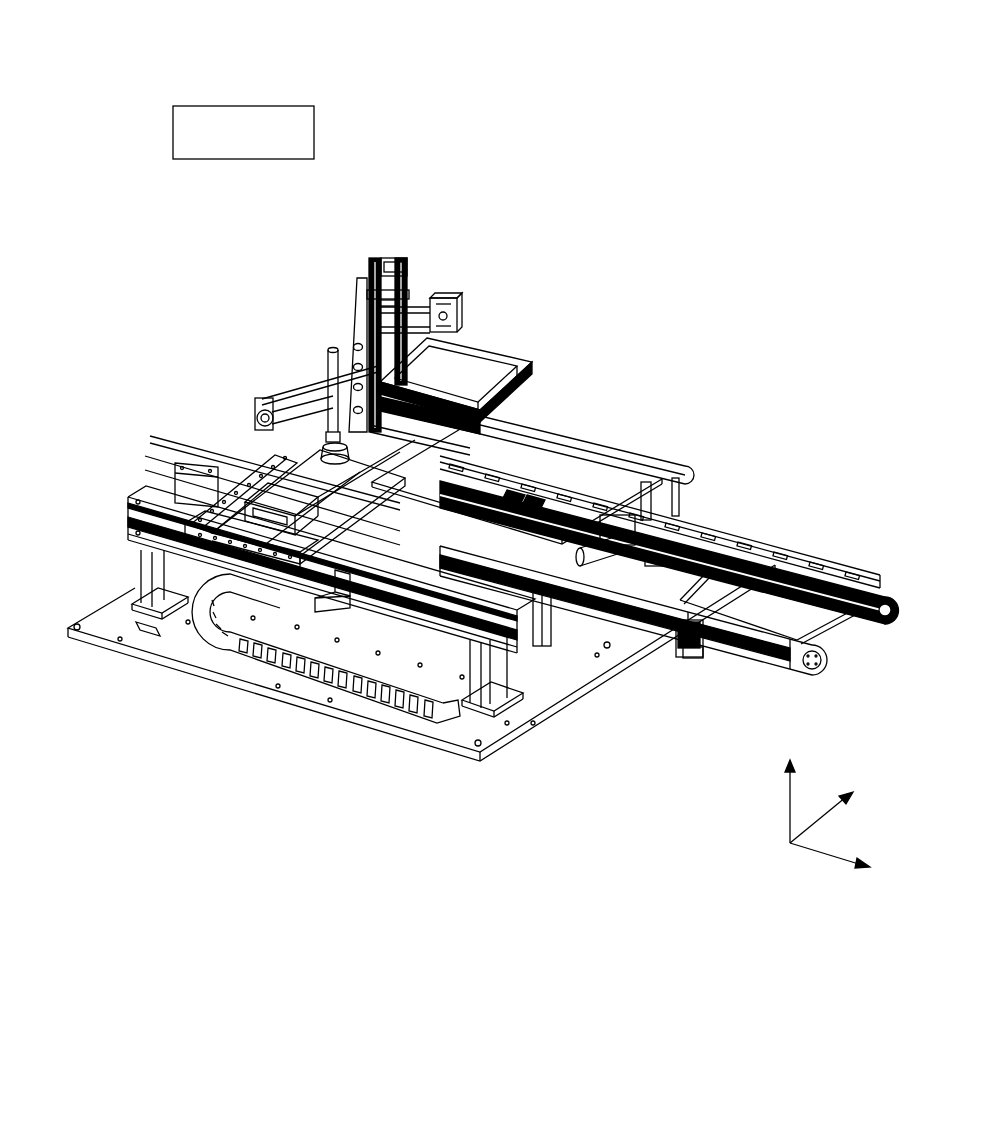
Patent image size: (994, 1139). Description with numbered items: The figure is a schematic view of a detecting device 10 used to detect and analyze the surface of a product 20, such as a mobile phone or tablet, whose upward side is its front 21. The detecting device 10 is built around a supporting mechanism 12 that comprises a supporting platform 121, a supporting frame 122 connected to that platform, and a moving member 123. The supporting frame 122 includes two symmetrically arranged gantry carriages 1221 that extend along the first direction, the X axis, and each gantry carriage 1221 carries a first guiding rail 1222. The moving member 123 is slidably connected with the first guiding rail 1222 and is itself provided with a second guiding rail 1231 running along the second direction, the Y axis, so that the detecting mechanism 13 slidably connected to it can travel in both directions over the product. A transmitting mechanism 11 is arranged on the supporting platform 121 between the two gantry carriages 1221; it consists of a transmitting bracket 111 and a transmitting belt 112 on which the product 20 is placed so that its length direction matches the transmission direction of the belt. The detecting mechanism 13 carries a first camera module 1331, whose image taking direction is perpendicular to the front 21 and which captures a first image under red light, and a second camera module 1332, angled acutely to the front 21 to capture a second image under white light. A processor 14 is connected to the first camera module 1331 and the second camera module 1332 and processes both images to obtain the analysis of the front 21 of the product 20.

The detecting device 10 is at (527, 36).
The transmitting mechanism 11 is at (693, 663).
The transmitting bracket 111 is at (555, 620).
The transmitting belt 112 is at (640, 618).
The supporting mechanism 12 is at (507, 828).
The supporting platform 121 is at (102, 633).
The supporting frame 122 is at (570, 773).
The gantry carriage 1221 is at (480, 682).
The first guiding rail 1222 is at (136, 507).
The moving member 123 is at (240, 535).
The second guiding rail 1231 is at (352, 473).
The detecting mechanism 13 is at (537, 346).
The first camera module 1331 is at (503, 300).
The second camera module 1332 is at (273, 422).
The processor 14 is at (314, 132).
The product 20 is at (600, 497).
The front 21 is at (504, 476).